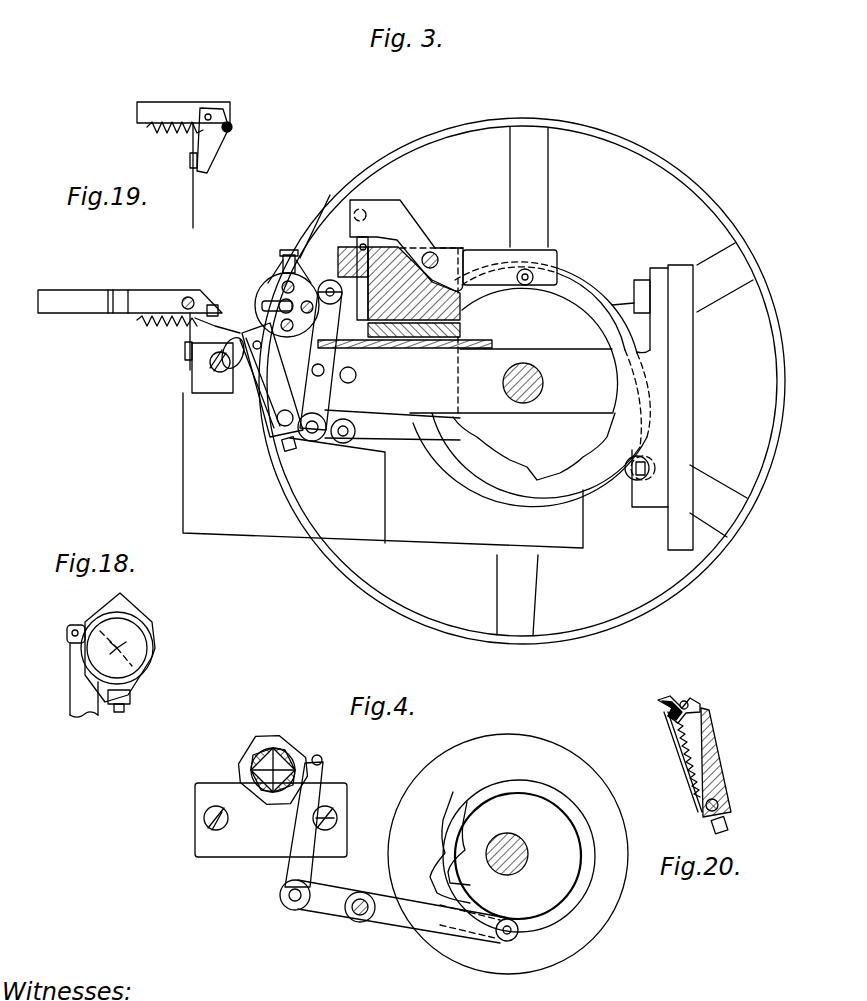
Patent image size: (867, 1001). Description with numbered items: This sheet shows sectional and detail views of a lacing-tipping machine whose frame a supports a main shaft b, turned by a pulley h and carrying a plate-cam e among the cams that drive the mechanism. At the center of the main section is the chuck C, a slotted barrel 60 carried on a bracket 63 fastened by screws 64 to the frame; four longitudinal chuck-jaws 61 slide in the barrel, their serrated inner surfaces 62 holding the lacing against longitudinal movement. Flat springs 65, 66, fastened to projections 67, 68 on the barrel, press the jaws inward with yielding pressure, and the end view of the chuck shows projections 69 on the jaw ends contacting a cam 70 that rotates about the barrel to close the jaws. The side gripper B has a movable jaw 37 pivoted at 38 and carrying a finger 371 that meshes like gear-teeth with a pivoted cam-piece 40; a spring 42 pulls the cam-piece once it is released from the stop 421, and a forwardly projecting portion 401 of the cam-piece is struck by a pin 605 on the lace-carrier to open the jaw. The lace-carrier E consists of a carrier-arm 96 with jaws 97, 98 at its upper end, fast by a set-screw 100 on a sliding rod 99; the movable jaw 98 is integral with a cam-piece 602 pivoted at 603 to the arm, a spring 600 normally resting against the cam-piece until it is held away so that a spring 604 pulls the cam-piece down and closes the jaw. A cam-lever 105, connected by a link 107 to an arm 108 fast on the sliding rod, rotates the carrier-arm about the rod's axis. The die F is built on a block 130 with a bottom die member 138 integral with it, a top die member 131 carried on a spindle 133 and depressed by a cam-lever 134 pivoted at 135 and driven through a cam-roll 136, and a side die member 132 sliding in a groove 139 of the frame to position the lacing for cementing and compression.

In FIG. 3, the pulley h is at (597, 132).
In FIG. 3, the frame a is at (207, 488).
In FIG. 3, the main shaft b is at (525, 381).
In FIG. 4, the main shaft b is at (505, 853).
In FIG. 4, the plate-cam e is at (522, 745).
In FIG. 3, the side gripper B is at (212, 312).
In FIG. 3, the chuck C is at (292, 262).
In FIG. 18, the chuck C is at (143, 636).
In FIG. 4, the chuck C is at (285, 752).
In FIG. 3, the lace-carrier E is at (262, 418).
In FIG. 20, the lace-carrier E is at (708, 742).
In FIG. 3, the die F is at (452, 252).
In FIG. 3, the movable jaw 37 is at (262, 320).
In FIG. 19, the movable jaw 37 is at (241, 118).
In FIG. 3, the pivot 38 is at (258, 322).
In FIG. 19, the pivot 38 is at (240, 122).
In FIG. 3, the cam-piece 40 is at (222, 342).
In FIG. 19, the cam-piece 40 is at (214, 106).
In FIG. 3, the spring 42 is at (170, 324).
In FIG. 19, the spring 42 is at (172, 136).
In FIG. 3, the projection 401 is at (217, 372).
In FIG. 19, the projection 401 is at (248, 138).
In FIG. 3, the stop 421 is at (184, 350).
In FIG. 19, the stop 421 is at (189, 160).
In FIG. 19, the finger 371 is at (231, 132).
In FIG. 18, the barrel 60 is at (138, 673).
In FIG. 4, the barrel 60 is at (320, 760).
In FIG. 3, the chuck-jaws 61 is at (268, 292).
In FIG. 18, the chuck-jaws 61 is at (147, 620).
In FIG. 3, the inner surfaces 62 is at (297, 306).
In FIG. 18, the inner surfaces 62 is at (120, 640).
In FIG. 4, the inner surfaces 62 is at (265, 770).
In FIG. 3, the bracket 63 is at (215, 376).
In FIG. 4, the bracket 63 is at (228, 846).
In FIG. 3, the screws 64 is at (212, 358).
In FIG. 4, the screws 64 is at (204, 818).
In FIG. 3, the flat spring 65 is at (305, 252).
In FIG. 18, the flat spring 65 is at (90, 619).
In FIG. 4, the flat spring 65 is at (270, 738).
In FIG. 18, the flat spring 66 is at (112, 704).
In FIG. 4, the flat spring 66 is at (260, 826).
In FIG. 18, the projection 67 is at (110, 610).
In FIG. 4, the projection 67 is at (282, 744).
In FIG. 18, the projection 68 is at (126, 706).
In FIG. 4, the projection 68 is at (274, 830).
In FIG. 18, the projections 69 is at (155, 624).
In FIG. 3, the cam 70 is at (277, 282).
In FIG. 18, the cam 70 is at (155, 656).
In FIG. 4, the cam 70 is at (250, 752).
In FIG. 3, the carrier-arm 96 is at (264, 402).
In FIG. 20, the carrier-arm 96 is at (720, 784).
In FIG. 20, the jaw 97 is at (688, 698).
In FIG. 3, the movable jaw 98 is at (255, 318).
In FIG. 20, the movable jaw 98 is at (703, 710).
In FIG. 3, the sliding rod 99 is at (284, 427).
In FIG. 20, the sliding rod 99 is at (705, 812).
In FIG. 3, the set-screw 100 is at (293, 449).
In FIG. 20, the set-screw 100 is at (730, 826).
In FIG. 3, the cam-lever 105 is at (404, 447).
In FIG. 3, the link 107 is at (349, 434).
In FIG. 3, the arm 108 is at (307, 380).
In FIG. 3, the block 130 is at (408, 340).
In FIG. 3, the top die member 131 is at (440, 268).
In FIG. 3, the side die member 132 is at (355, 349).
In FIG. 3, the spindle 133 is at (405, 262).
In FIG. 3, the cam-lever 134 is at (402, 204).
In FIG. 3, the pivot 135 is at (440, 260).
In FIG. 3, the cam-roll 136 is at (545, 262).
In FIG. 3, the bottom die member 138 is at (382, 376).
In FIG. 3, the groove 139 is at (364, 240).
In FIG. 3, the spring 600 is at (252, 393).
In FIG. 20, the spring 600 is at (678, 746).
In FIG. 20, the cam-piece 602 is at (674, 700).
In FIG. 20, the pivot 603 is at (692, 704).
In FIG. 20, the spring 604 is at (688, 776).
In FIG. 3, the pin 605 is at (259, 350).